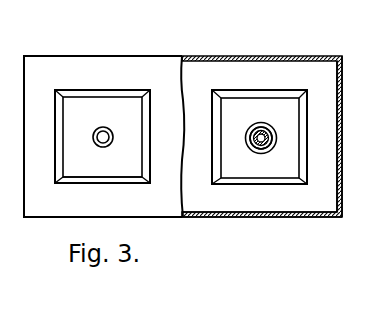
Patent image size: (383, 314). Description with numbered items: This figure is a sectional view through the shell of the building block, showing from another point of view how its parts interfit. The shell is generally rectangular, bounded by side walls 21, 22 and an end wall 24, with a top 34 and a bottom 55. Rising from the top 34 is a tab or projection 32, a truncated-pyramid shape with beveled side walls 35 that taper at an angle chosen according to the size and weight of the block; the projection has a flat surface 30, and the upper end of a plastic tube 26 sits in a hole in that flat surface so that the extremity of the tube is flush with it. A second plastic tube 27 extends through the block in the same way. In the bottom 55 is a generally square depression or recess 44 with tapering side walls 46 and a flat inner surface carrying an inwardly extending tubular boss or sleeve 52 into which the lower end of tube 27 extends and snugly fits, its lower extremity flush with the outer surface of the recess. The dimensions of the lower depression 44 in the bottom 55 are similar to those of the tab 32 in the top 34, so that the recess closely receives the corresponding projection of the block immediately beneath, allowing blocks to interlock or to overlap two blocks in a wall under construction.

The side wall 21 is at (272, 214).
The side wall 22 is at (258, 58).
The end wall 24 is at (336, 129).
The plastic tube 26 is at (102, 147).
The plastic tube 27 is at (265, 131).
The flat surface 30 is at (72, 134).
The tab 32 is at (63, 163).
The top 34 is at (107, 63).
The side walls 35 is at (86, 184).
The depression 44 is at (298, 167).
The tapering side walls 46 is at (298, 182).
The tubular boss 52 is at (274, 141).
The bottom 55 is at (203, 197).